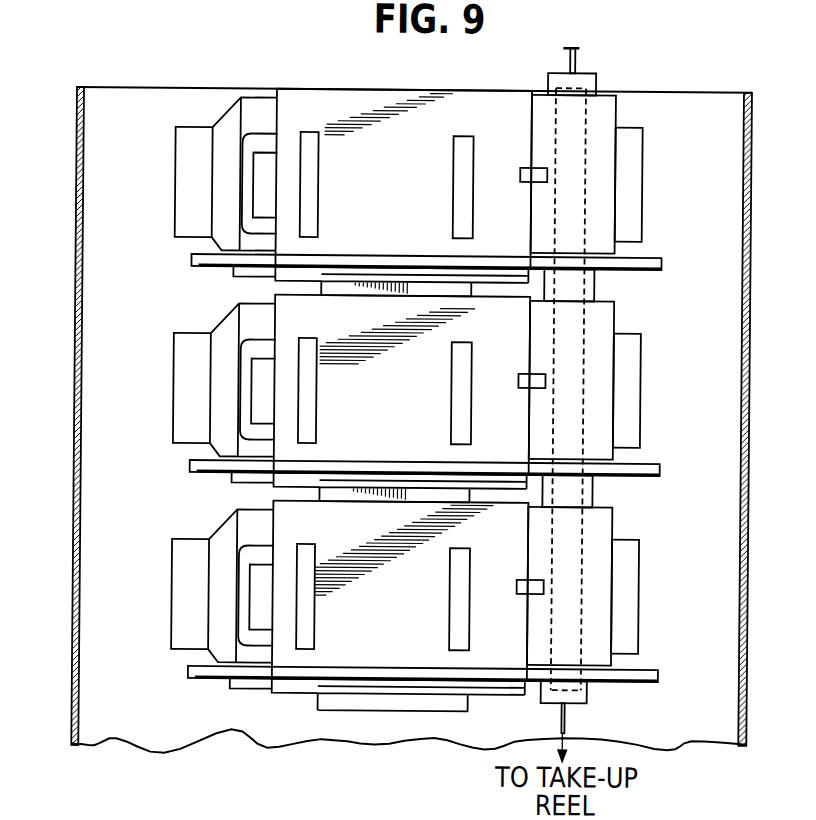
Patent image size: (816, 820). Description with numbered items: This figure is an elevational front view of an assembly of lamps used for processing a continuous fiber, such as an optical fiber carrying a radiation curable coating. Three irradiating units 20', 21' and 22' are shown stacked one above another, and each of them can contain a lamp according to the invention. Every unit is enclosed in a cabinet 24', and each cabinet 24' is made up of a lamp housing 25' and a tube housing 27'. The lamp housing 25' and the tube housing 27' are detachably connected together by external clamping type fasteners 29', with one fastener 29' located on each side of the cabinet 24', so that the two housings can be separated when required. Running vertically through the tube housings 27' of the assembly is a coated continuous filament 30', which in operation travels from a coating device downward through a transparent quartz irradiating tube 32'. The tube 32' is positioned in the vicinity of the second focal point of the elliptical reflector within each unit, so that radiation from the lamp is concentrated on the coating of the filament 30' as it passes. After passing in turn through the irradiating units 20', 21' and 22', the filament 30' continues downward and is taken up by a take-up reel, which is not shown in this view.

The irradiating unit 20' is at (437, 357).
The irradiating unit 21' is at (416, 401).
The irradiating unit 22' is at (414, 631).
The cabinet 24' is at (411, 391).
The lamp housing 25' is at (403, 160).
The tube housing 27' is at (542, 370).
The external clamping type fastener 29' is at (516, 148).
The coated continuous filament 30' is at (553, 60).
The transparent quartz irradiating tube 32' is at (643, 177).